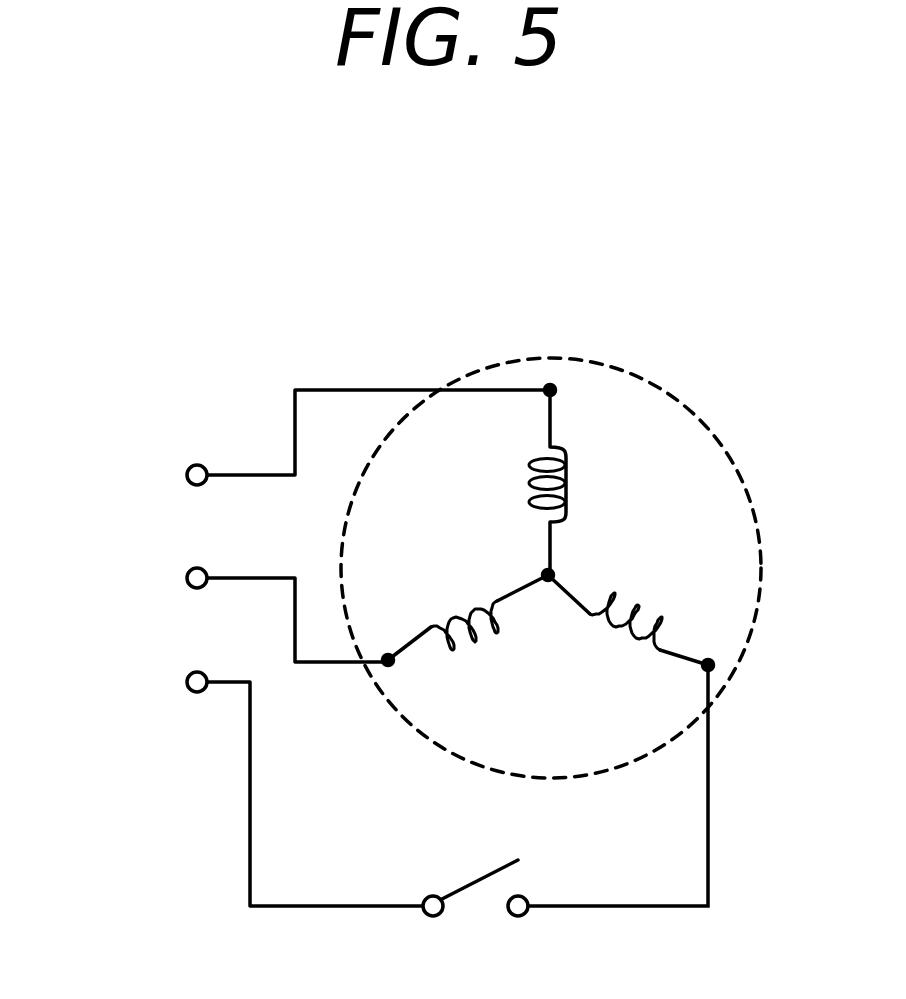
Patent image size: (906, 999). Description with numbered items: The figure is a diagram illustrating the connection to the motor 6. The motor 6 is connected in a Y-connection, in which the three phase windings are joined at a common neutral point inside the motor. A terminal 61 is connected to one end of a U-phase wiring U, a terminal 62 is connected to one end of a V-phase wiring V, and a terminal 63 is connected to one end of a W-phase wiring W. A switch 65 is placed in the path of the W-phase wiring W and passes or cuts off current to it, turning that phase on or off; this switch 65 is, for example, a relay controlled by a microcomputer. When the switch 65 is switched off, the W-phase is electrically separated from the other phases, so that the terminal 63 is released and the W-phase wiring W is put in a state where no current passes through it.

The motor 6 is at (551, 512).
The U-phase wiring U is at (567, 478).
The V-phase wiring V is at (458, 607).
The W-phase wiring W is at (617, 640).
The terminal 61 is at (186, 475).
The terminal 62 is at (186, 578).
The terminal 63 is at (186, 682).
The switch 65 is at (463, 884).